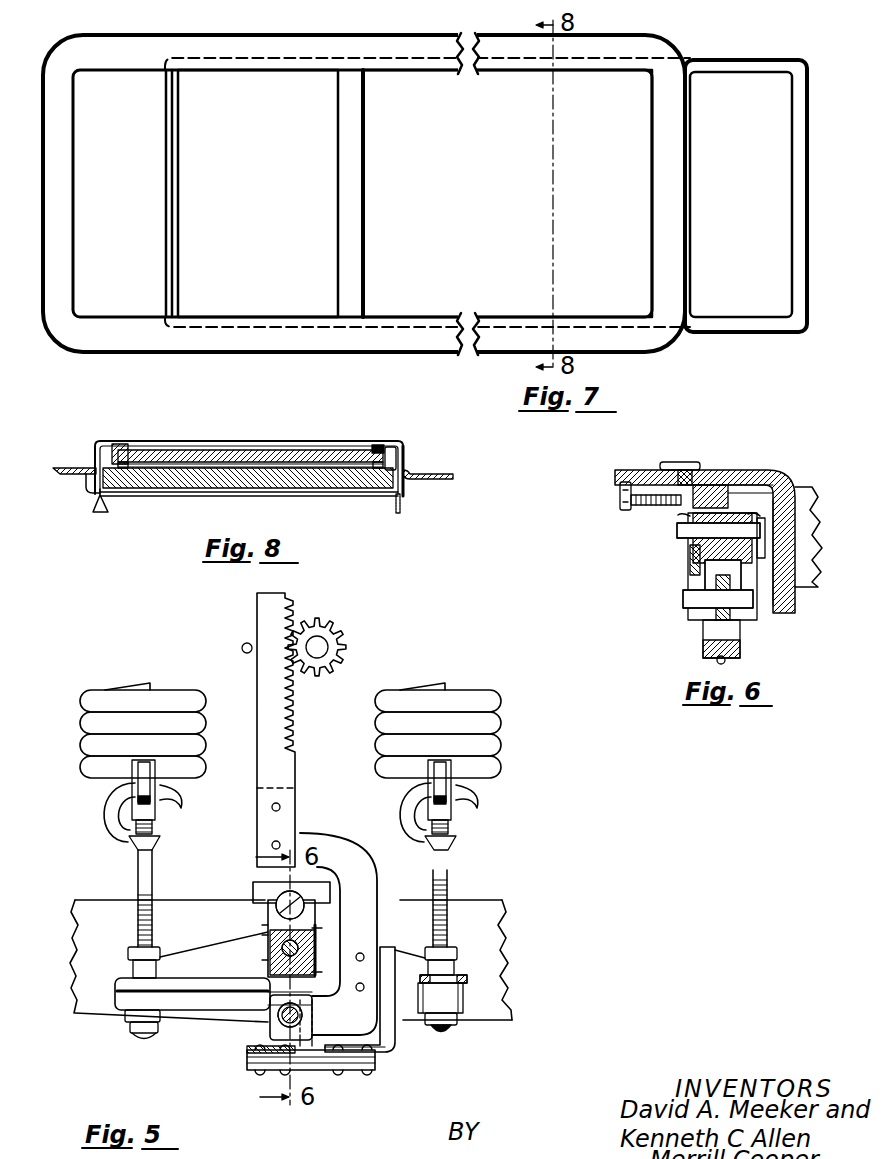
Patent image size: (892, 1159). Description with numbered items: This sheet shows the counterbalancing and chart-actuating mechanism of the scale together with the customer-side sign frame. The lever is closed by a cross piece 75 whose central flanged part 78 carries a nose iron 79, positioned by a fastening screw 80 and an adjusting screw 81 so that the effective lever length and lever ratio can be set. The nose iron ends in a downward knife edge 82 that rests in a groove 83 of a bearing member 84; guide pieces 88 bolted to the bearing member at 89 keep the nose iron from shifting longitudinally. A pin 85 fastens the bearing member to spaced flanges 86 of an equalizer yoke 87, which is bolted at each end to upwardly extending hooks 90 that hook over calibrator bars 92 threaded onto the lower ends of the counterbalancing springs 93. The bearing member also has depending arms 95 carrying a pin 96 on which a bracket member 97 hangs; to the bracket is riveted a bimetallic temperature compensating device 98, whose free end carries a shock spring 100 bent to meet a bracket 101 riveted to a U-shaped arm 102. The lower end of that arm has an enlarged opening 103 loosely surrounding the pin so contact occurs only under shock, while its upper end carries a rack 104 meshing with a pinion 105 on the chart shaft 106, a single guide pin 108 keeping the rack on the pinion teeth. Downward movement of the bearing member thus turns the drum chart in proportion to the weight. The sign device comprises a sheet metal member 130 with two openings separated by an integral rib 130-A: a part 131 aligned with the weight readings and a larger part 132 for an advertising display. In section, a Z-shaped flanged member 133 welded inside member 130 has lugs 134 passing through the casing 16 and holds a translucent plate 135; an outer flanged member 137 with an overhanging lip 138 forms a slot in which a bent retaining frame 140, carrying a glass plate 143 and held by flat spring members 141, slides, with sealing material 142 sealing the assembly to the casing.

In FIG. 7, the sheet metal member 130 is at (116, 341).
In FIG. 8, the sheet metal member 130 is at (96, 447).
In FIG. 7, the integral rib 130-A is at (343, 212).
In FIG. 7, the part in line with the weight readings 131 is at (235, 270).
In FIG. 7, the part of larger extent 132 is at (495, 290).
In FIG. 7, the retaining frame 140 is at (758, 320).
In FIG. 8, the retaining frame 140 is at (130, 452).
In FIG. 8, the sealing material 142 is at (90, 470).
In FIG. 8, the flat spring members 141 is at (150, 458).
In FIG. 8, the glass plate 143 is at (231, 451).
In FIG. 8, the overhanging lip 138 is at (372, 448).
In FIG. 8, the outer flanged member 137 is at (393, 446).
In FIG. 8, the Z-shaped flanged member 133 is at (406, 460).
In FIG. 8, the casing 16 is at (452, 474).
In FIG. 8, the lugs 134 is at (400, 505).
In FIG. 8, the translucent plate 135 is at (152, 478).
In FIG. 6, the flanged part 78 is at (737, 470).
In FIG. 6, the knife edge 82 is at (743, 487).
In FIG. 6, the cross piece 75 is at (783, 612).
In FIG. 5, the cross piece 75 is at (92, 906).
In FIG. 6, the fastening screw 80 is at (680, 467).
In FIG. 6, the nose iron 79 is at (710, 482).
In FIG. 6, the adjusting screw 81 is at (620, 503).
In FIG. 6, the groove 83 is at (680, 516).
In FIG. 6, the pin 85 is at (685, 533).
In FIG. 6, the bearing member 84 is at (690, 548).
In FIG. 6, the spaced flanges 86 is at (693, 566).
In FIG. 5, the spaced flanges 86 is at (237, 953).
In FIG. 6, the depending arms 95 is at (700, 580).
In FIG. 6, the pin 96 is at (690, 600).
In FIG. 5, the pin 96 is at (285, 1026).
In FIG. 6, the bracket member 97 is at (705, 628).
In FIG. 5, the bracket member 97 is at (268, 1040).
In FIG. 5, the rack 104 is at (270, 721).
In FIG. 5, the pinion 105 is at (340, 633).
In FIG. 5, the shaft 106 is at (322, 648).
In FIG. 5, the guide pin 108 is at (243, 645).
In FIG. 5, the counterbalancing springs 93 is at (486, 708).
In FIG. 5, the hooks 90 is at (146, 870).
In FIG. 5, the calibrator bars 92 is at (448, 800).
In FIG. 5, the equalizer yoke 87 is at (183, 974).
In FIG. 5, the guide pieces 88 is at (323, 940).
In FIG. 5, the bolting point 89 is at (360, 930).
In FIG. 5, the temperature compensating device 98 is at (247, 1057).
In FIG. 5, the shock spring 100 is at (397, 1048).
In FIG. 5, the bracket 101 is at (382, 1023).
In FIG. 5, the U-shaped arm 102 is at (317, 930).
In FIG. 5, the enlarged opening 103 is at (313, 1037).